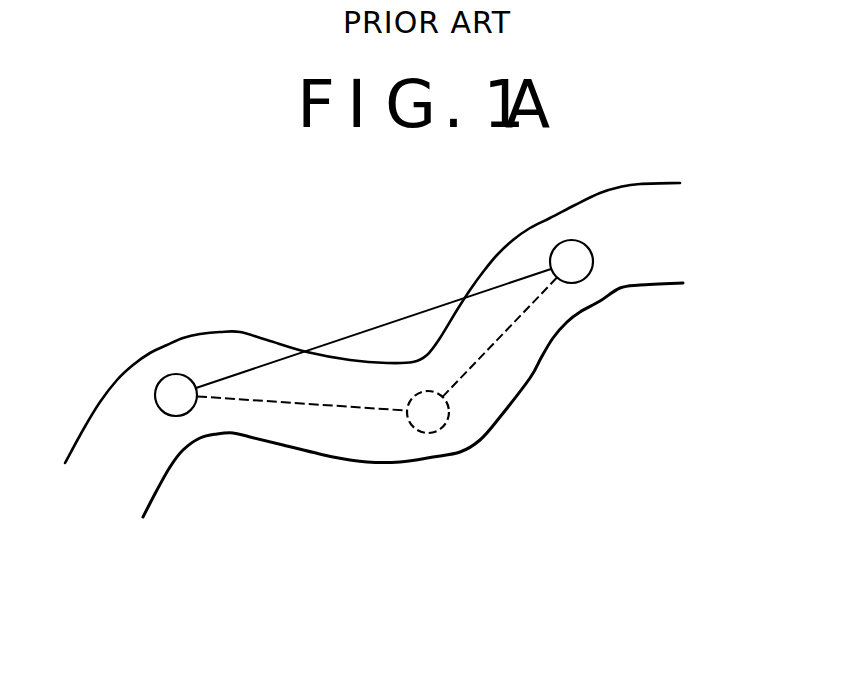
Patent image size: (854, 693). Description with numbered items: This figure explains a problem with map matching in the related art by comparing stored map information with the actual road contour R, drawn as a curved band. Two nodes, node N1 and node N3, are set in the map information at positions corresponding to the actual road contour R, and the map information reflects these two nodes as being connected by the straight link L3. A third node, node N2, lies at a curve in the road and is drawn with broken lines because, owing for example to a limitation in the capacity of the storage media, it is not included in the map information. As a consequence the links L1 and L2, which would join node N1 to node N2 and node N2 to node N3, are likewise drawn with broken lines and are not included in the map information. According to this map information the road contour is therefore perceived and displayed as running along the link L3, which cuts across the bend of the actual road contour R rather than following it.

The node N1 is at (161, 410).
The node N2 is at (433, 433).
The node N3 is at (588, 249).
The link L1 is at (257, 400).
The link L2 is at (472, 366).
The link L3 is at (372, 329).
The actual road contour R is at (688, 180).